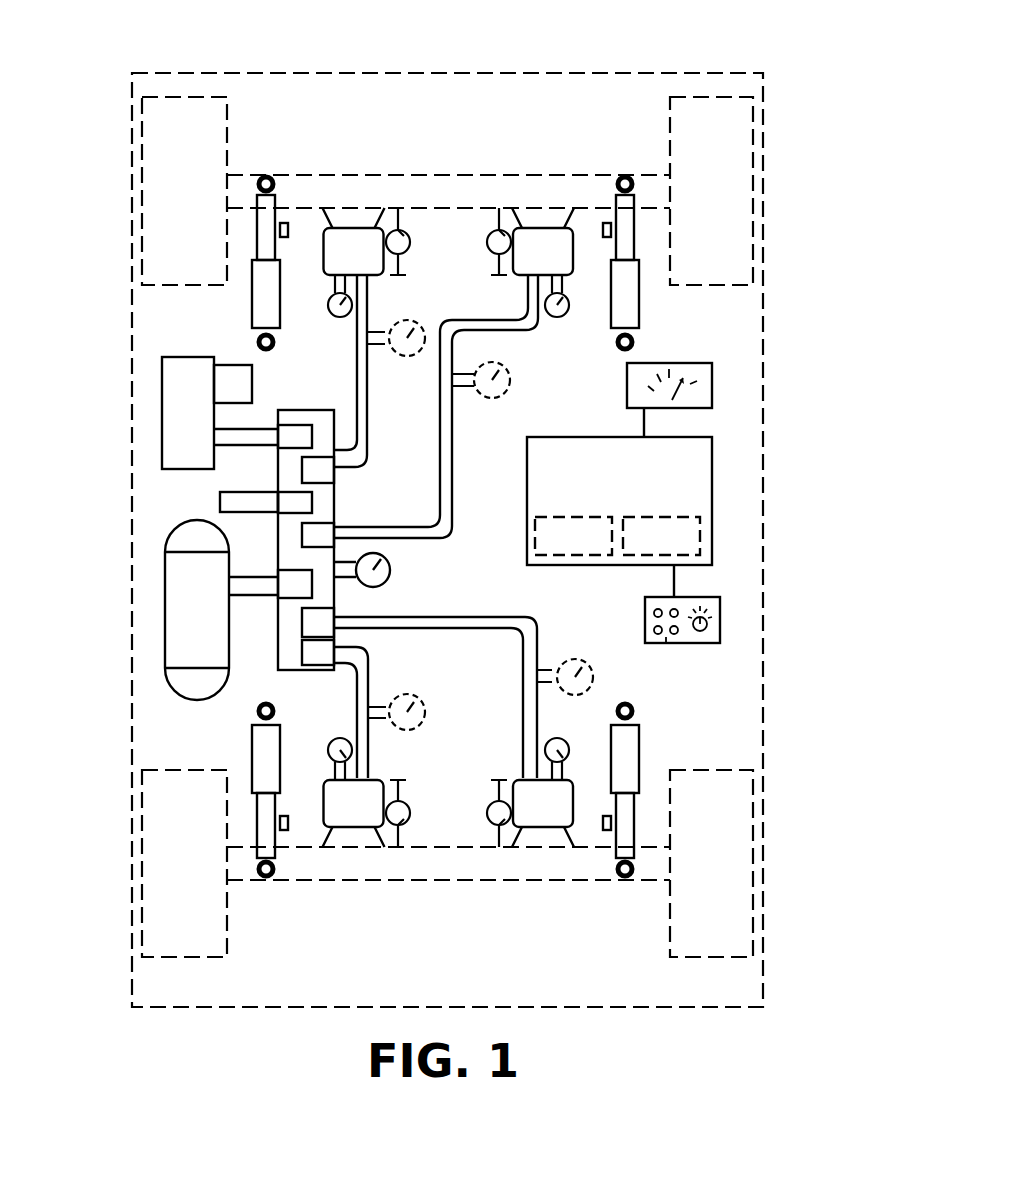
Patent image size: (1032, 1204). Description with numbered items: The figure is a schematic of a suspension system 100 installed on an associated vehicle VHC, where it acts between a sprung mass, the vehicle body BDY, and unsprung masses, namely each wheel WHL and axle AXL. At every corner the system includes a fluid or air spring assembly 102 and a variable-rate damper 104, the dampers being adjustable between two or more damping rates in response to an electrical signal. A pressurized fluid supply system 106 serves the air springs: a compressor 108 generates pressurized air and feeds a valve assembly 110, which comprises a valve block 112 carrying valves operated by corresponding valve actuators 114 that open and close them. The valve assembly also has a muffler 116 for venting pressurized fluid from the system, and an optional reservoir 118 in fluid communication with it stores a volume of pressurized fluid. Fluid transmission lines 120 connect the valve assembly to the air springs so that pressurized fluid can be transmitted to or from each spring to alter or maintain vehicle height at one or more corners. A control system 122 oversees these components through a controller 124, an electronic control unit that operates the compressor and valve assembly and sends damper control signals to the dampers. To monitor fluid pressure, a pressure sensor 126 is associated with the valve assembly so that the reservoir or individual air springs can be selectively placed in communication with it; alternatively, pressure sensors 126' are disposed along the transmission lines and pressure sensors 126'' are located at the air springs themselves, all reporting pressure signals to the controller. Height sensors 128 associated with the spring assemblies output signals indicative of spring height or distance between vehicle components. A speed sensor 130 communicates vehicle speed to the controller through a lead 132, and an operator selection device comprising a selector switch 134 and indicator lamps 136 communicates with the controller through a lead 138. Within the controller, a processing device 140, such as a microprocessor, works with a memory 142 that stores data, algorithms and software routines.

The suspension system 100 is at (717, 343).
The air spring assembly 102 is at (353, 238).
The damper 104 is at (250, 305).
The pressurized fluid supply system 106 is at (167, 528).
The compressor 108 is at (177, 403).
The valve assembly 110 is at (332, 518).
The valve block 112 is at (302, 410).
The valve actuator 114 is at (322, 462).
The muffler 116 is at (225, 502).
The reservoir 118 is at (177, 647).
The fluid transmission line 120 is at (368, 442).
The control system 122 is at (680, 524).
The controller 124 is at (680, 501).
The pressure sensor 126 is at (402, 570).
The pressure sensor 126' is at (500, 523).
The pressure sensor 126'' is at (447, 527).
The height sensor 128 is at (402, 230).
The speed sensor 130 is at (712, 385).
The lead 132 is at (644, 425).
The selector switch 134 is at (720, 617).
The indicator lamp 136 is at (665, 643).
The lead 138 is at (674, 583).
The processing device 140 is at (567, 517).
The memory 142 is at (655, 517).
The vehicle body BDY is at (524, 72).
The wheel WHL is at (160, 157).
The axle AXL is at (445, 175).
The vehicle VHC is at (700, 42).